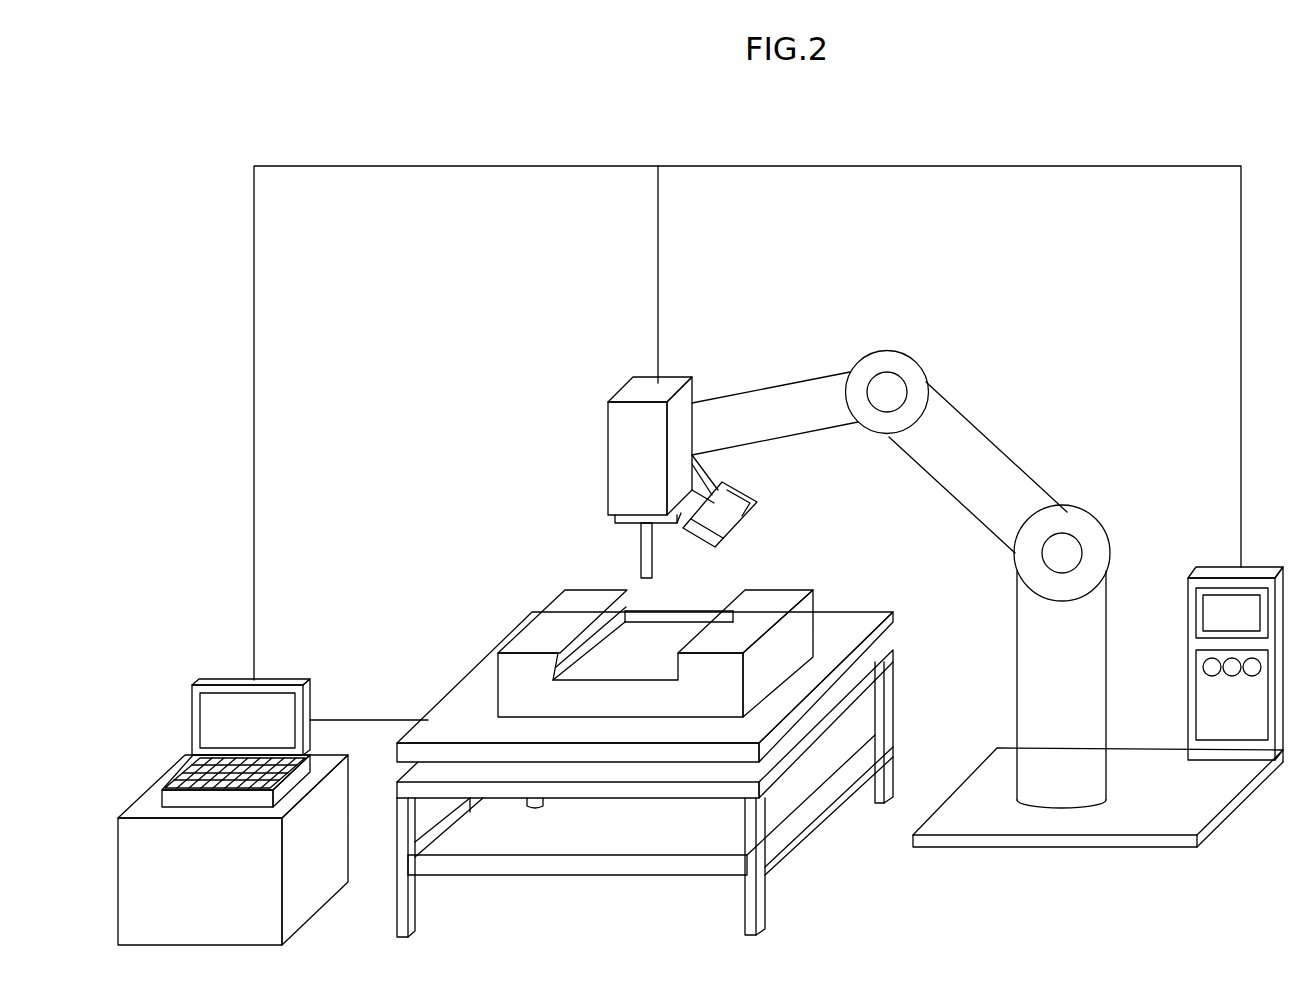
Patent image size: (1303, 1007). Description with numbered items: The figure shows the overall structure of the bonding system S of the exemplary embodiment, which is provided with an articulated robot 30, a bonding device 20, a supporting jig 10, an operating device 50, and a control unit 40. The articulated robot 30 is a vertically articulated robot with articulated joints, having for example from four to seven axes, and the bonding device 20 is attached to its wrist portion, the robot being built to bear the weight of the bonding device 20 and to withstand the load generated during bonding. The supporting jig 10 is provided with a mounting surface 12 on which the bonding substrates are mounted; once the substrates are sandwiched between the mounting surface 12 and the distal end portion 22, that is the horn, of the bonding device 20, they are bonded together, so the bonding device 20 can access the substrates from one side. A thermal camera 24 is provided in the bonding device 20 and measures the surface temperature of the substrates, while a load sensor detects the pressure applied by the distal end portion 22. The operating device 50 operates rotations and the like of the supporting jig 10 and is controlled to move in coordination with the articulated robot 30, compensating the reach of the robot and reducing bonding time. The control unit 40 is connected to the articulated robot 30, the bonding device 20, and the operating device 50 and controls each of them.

The bonding system S is at (1053, 151).
The supporting jig 10 is at (813, 594).
The mounting surface 12 is at (672, 634).
The bonding device 20 is at (606, 443).
The distal end portion 22 is at (640, 566).
The thermal camera 24 is at (757, 494).
The articulated robot 30 is at (997, 432).
The control unit 40 is at (222, 678).
The operating device 50 is at (455, 681).